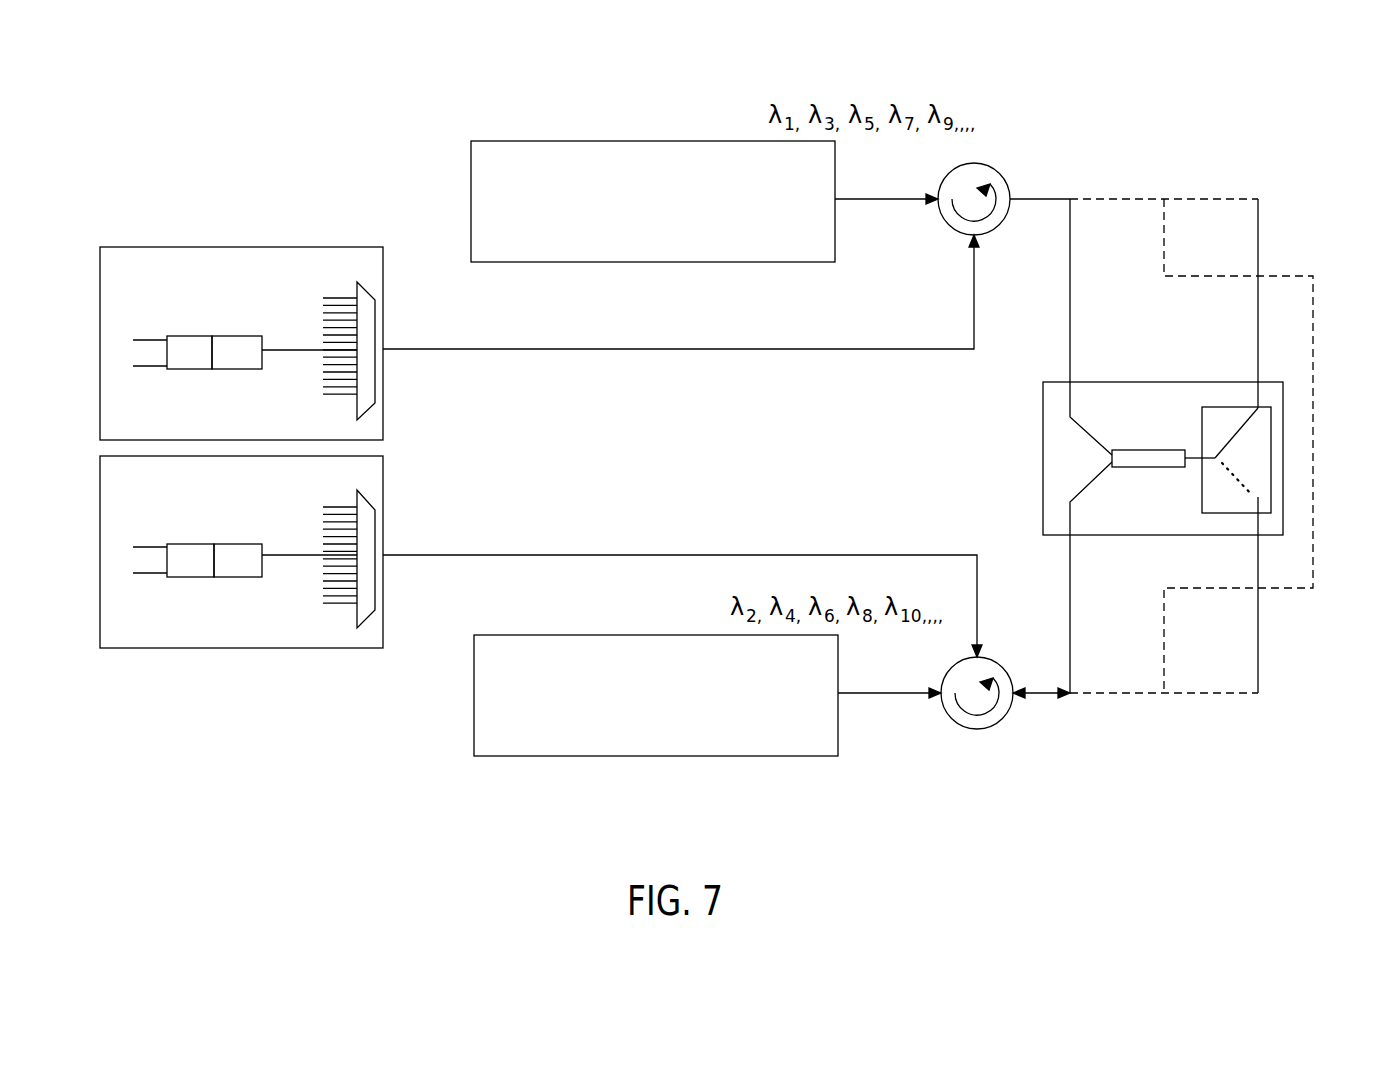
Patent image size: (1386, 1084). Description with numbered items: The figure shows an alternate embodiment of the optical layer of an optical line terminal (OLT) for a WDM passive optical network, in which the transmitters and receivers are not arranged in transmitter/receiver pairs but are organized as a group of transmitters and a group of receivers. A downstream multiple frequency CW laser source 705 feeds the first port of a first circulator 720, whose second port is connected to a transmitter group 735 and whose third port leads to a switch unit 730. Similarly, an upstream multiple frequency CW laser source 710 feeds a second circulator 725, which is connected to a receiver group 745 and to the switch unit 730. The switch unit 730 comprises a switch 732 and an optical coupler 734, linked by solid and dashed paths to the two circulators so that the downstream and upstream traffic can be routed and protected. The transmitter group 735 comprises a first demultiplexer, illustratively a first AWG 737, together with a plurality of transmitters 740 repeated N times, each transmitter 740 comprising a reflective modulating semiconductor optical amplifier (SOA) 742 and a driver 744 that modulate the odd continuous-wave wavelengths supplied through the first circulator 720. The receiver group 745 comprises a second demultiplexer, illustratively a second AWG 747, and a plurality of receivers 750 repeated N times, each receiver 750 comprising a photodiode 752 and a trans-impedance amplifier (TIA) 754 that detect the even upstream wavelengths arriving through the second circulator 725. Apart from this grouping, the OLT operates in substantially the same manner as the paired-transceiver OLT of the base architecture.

The downstream multiple frequency CW laser source 705 is at (490, 141).
The upstream multiple frequency CW laser source 710 is at (495, 635).
The first circulator 720 is at (990, 143).
The second circulator 725 is at (980, 788).
The switch unit 730 is at (1173, 429).
The switch 732 is at (1260, 407).
The optical coupler 734 is at (1135, 450).
The transmitter group 735 is at (229, 343).
The first demultiplexer 737 is at (372, 288).
The transmitter 740 is at (121, 342).
The reflective modulating semiconductor optical amplifier 742 is at (178, 369).
The driver 744 is at (247, 369).
The receiver group 745 is at (229, 552).
The second demultiplexer 747 is at (372, 497).
The receiver 750 is at (121, 549).
The photodiode 752 is at (178, 578).
The trans-impedance amplifier 754 is at (247, 578).